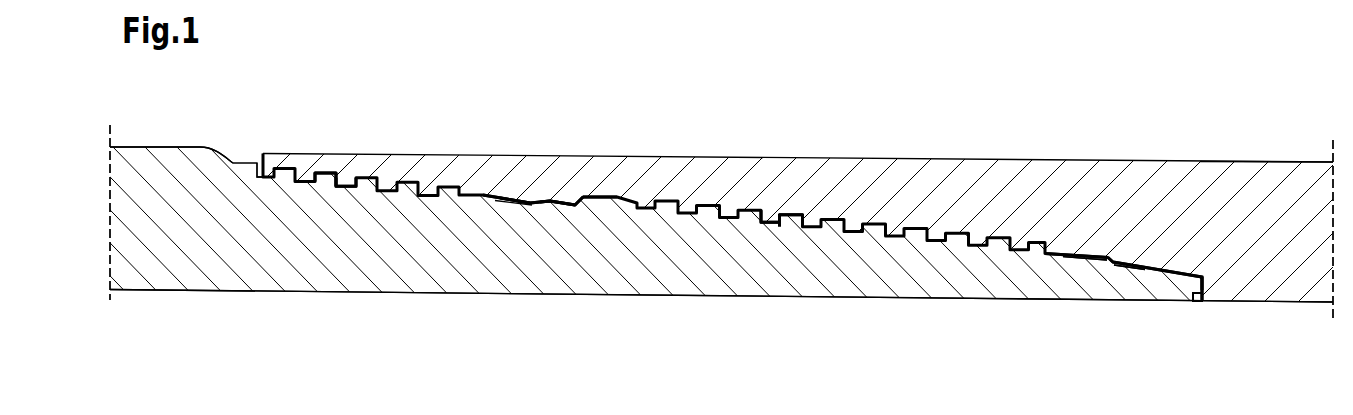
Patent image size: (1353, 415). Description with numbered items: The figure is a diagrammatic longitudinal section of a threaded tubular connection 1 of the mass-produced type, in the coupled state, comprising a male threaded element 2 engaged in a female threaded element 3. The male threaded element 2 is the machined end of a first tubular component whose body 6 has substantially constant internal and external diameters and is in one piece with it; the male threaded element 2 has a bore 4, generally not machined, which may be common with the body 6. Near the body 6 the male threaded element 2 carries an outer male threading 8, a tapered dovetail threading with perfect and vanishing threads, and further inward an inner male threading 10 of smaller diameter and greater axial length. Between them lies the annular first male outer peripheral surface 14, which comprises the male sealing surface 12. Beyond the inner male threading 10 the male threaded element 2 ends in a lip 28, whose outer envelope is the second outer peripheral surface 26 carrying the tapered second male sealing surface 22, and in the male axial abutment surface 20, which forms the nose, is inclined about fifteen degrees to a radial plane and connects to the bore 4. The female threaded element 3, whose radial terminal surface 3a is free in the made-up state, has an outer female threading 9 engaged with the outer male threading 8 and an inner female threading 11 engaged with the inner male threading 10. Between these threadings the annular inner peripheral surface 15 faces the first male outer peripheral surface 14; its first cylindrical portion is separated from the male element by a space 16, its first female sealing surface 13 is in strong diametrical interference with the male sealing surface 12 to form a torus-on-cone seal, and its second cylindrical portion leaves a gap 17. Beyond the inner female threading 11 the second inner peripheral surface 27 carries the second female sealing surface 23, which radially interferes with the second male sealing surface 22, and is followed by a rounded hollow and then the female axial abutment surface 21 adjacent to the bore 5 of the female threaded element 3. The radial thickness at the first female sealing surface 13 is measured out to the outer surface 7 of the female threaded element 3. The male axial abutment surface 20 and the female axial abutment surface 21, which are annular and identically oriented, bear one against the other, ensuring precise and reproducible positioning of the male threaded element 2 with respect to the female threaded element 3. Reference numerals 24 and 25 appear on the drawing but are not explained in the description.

The threaded tubular connection 1 is at (683, 336).
The male threaded element 2 is at (397, 257).
The female threaded element 3 is at (1156, 224).
The terminal surface 3a is at (250, 162).
The bore 4 is at (378, 291).
The bore 5 is at (1278, 301).
The body 6 is at (160, 148).
The outer surface 7 is at (1275, 162).
The outer male threading 8 is at (332, 178).
The outer female threading 9 is at (348, 188).
The inner male threading 10 is at (791, 212).
The inner female threading 11 is at (767, 226).
The male sealing surface 12 is at (543, 200).
The first female sealing surface 13 is at (553, 203).
The first male outer peripheral surface 14 is at (510, 195).
The inner peripheral surface 15 is at (503, 201).
The space 16 is at (513, 201).
The gap 17 is at (598, 200).
The male axial abutment surface 20 is at (1205, 292).
The female axial abutment surface 21 is at (1196, 303).
The second male sealing surface 22 is at (1130, 264).
The second female sealing surface 23 is at (1122, 268).
The inclined surface 24 is at (1200, 276).
The inclined surface of first part 25 is at (1188, 281).
The second outer peripheral surface 26 is at (1085, 254).
The second inner peripheral surface 27 is at (1090, 262).
The lip 28 is at (1140, 298).